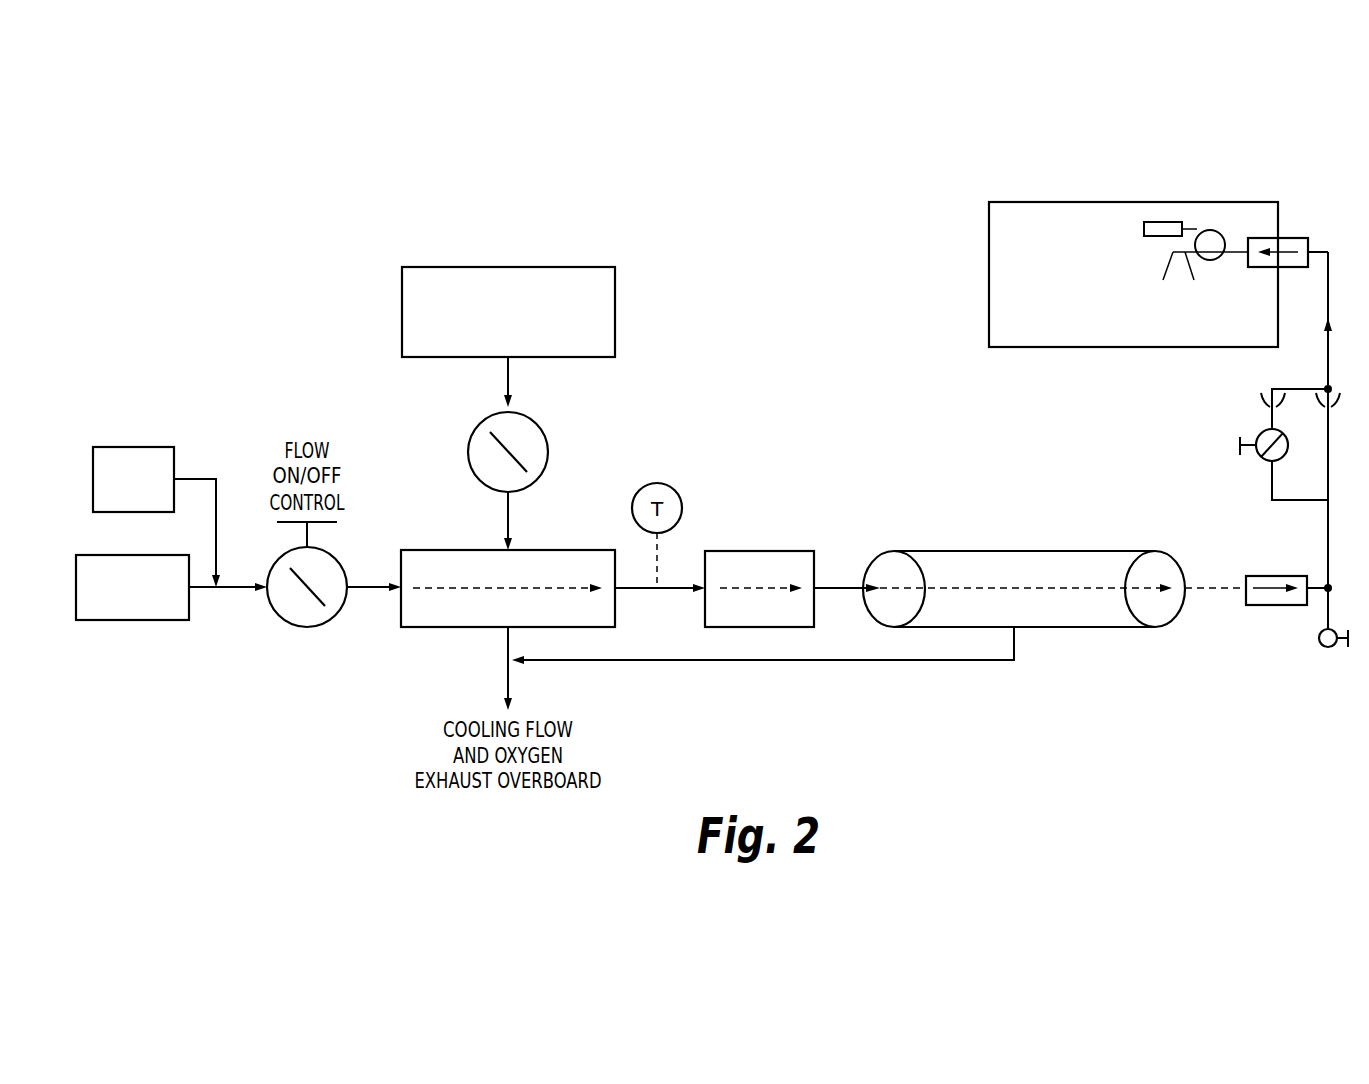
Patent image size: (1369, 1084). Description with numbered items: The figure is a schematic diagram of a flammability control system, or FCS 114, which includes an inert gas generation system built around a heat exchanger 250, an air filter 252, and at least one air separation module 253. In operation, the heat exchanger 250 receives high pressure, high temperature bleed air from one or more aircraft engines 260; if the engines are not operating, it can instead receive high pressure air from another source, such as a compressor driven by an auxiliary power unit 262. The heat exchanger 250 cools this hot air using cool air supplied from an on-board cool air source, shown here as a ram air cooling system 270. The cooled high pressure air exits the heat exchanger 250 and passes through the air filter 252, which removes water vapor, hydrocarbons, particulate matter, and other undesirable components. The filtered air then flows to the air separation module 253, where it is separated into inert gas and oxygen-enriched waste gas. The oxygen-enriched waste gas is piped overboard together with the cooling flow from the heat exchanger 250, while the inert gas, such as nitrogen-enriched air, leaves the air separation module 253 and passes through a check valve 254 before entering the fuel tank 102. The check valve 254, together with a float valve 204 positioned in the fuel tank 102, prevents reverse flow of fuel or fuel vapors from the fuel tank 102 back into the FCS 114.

The flammability control system 114 is at (236, 376).
The auxiliary power unit 262 is at (113, 447).
The aircraft engines 260 is at (110, 620).
The ram air cooling system 270 is at (420, 267).
The heat exchanger 250 is at (425, 627).
The air filter 252 is at (787, 551).
The air separation module 253 is at (1108, 551).
The check valve 254 is at (1270, 420).
The fuel tank 102 is at (1072, 202).
The float valve 204 is at (1185, 225).